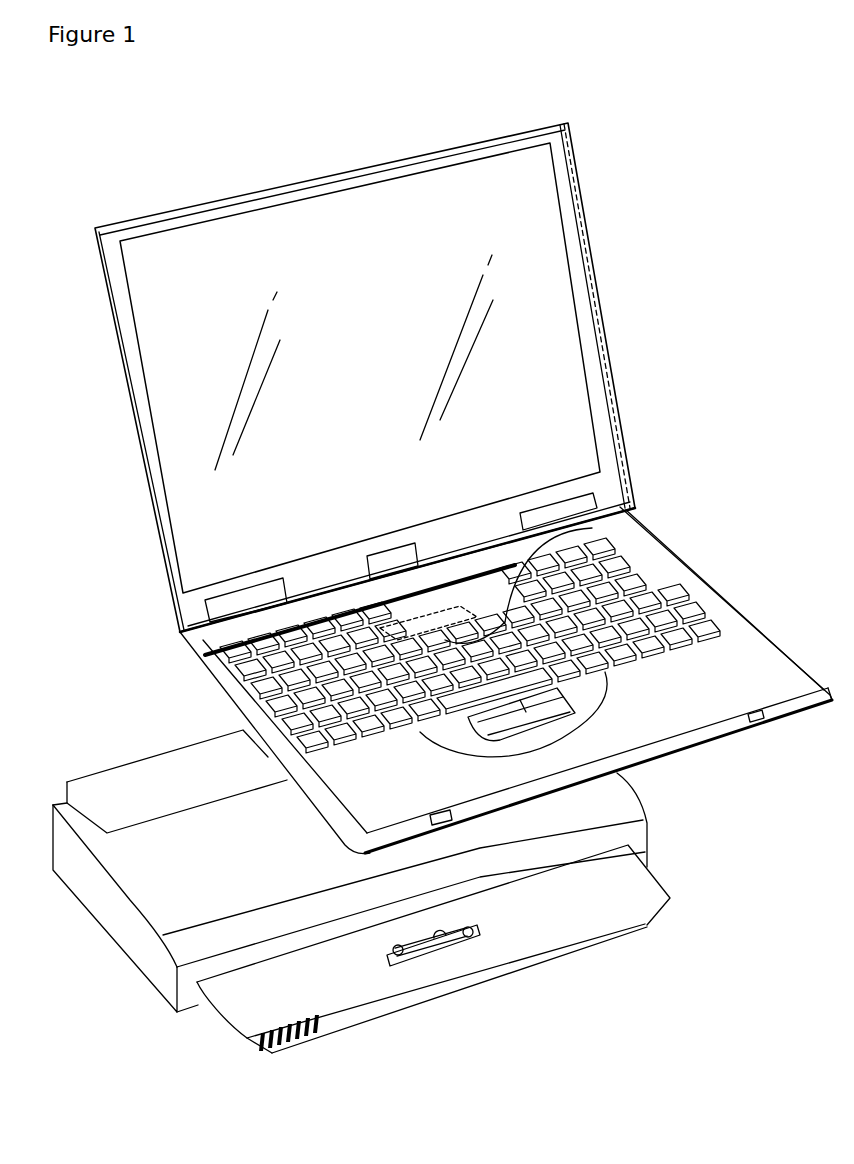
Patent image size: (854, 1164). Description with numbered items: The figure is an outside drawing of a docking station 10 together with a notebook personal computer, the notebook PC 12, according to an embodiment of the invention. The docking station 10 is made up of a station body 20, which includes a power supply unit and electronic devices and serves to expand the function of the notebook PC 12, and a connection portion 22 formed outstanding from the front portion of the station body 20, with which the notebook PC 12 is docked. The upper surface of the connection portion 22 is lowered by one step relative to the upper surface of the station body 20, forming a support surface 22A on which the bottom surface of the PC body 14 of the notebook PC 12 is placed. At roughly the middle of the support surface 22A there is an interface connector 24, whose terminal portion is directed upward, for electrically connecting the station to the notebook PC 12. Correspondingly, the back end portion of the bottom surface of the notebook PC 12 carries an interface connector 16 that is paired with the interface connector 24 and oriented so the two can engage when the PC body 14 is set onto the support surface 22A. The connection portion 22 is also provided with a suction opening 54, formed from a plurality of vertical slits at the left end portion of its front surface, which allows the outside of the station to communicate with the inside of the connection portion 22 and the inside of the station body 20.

The docking station 10 is at (121, 745).
The notebook personal computer 12 is at (674, 304).
The PC body 14 is at (725, 607).
The interface connector 16 is at (598, 533).
The station body 20 is at (130, 920).
The connection portion 22 is at (678, 922).
The support surface 22A is at (623, 890).
The interface connector 24 is at (455, 940).
The suction opening 54 is at (310, 1055).